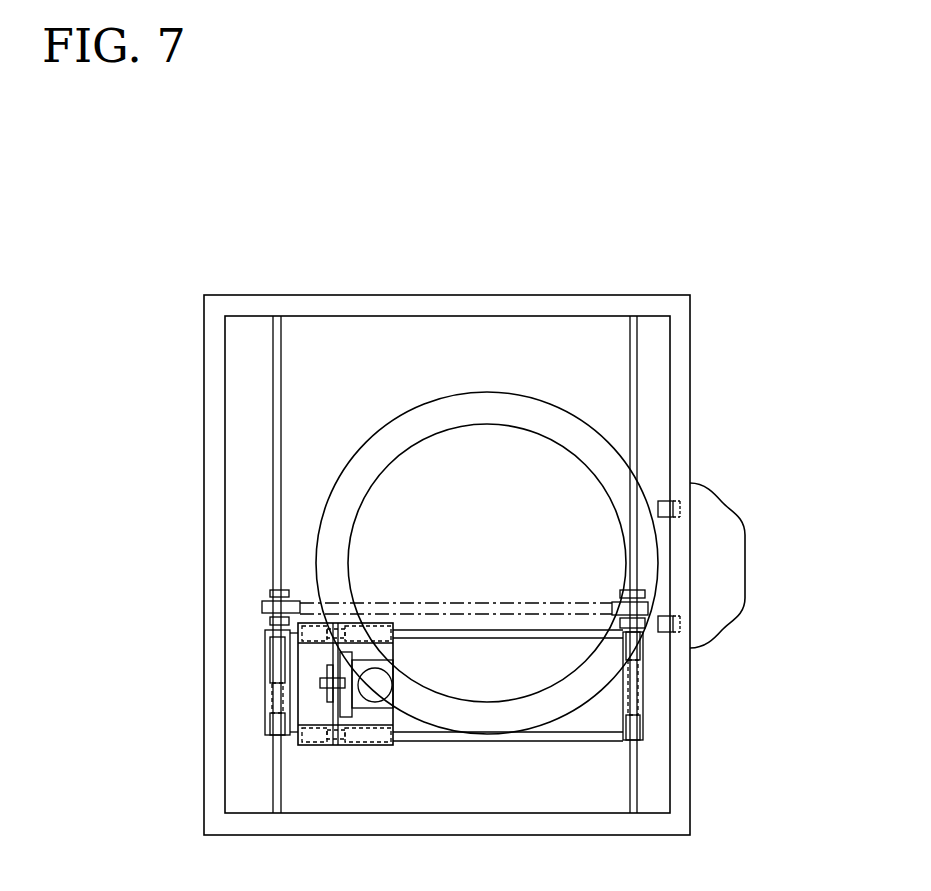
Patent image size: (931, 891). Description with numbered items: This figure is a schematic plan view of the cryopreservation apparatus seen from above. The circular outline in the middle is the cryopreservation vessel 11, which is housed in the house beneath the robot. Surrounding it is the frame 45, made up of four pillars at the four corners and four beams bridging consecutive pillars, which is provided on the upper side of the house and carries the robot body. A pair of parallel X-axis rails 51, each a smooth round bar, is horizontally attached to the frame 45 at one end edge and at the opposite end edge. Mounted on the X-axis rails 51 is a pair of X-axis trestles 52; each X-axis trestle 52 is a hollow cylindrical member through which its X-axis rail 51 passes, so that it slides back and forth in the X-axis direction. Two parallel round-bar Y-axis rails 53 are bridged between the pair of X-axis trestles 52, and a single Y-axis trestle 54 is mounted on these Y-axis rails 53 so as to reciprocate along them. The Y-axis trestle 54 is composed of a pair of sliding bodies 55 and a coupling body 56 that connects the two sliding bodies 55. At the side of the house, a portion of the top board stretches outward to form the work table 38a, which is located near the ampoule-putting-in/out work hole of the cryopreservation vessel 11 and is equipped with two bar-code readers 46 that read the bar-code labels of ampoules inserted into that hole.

The frame 45 is at (555, 305).
The cryopreservation vessel 11 is at (489, 458).
The X-axis rail 51 is at (275, 406).
The X-axis trestle 52 is at (638, 689).
The Y-axis rail 53 is at (441, 633).
The Y-axis trestle 54 is at (296, 689).
The sliding body 55 is at (376, 628).
The coupling body 56 is at (315, 662).
The bar-code reader 46 is at (675, 509).
The work table 38a is at (717, 563).